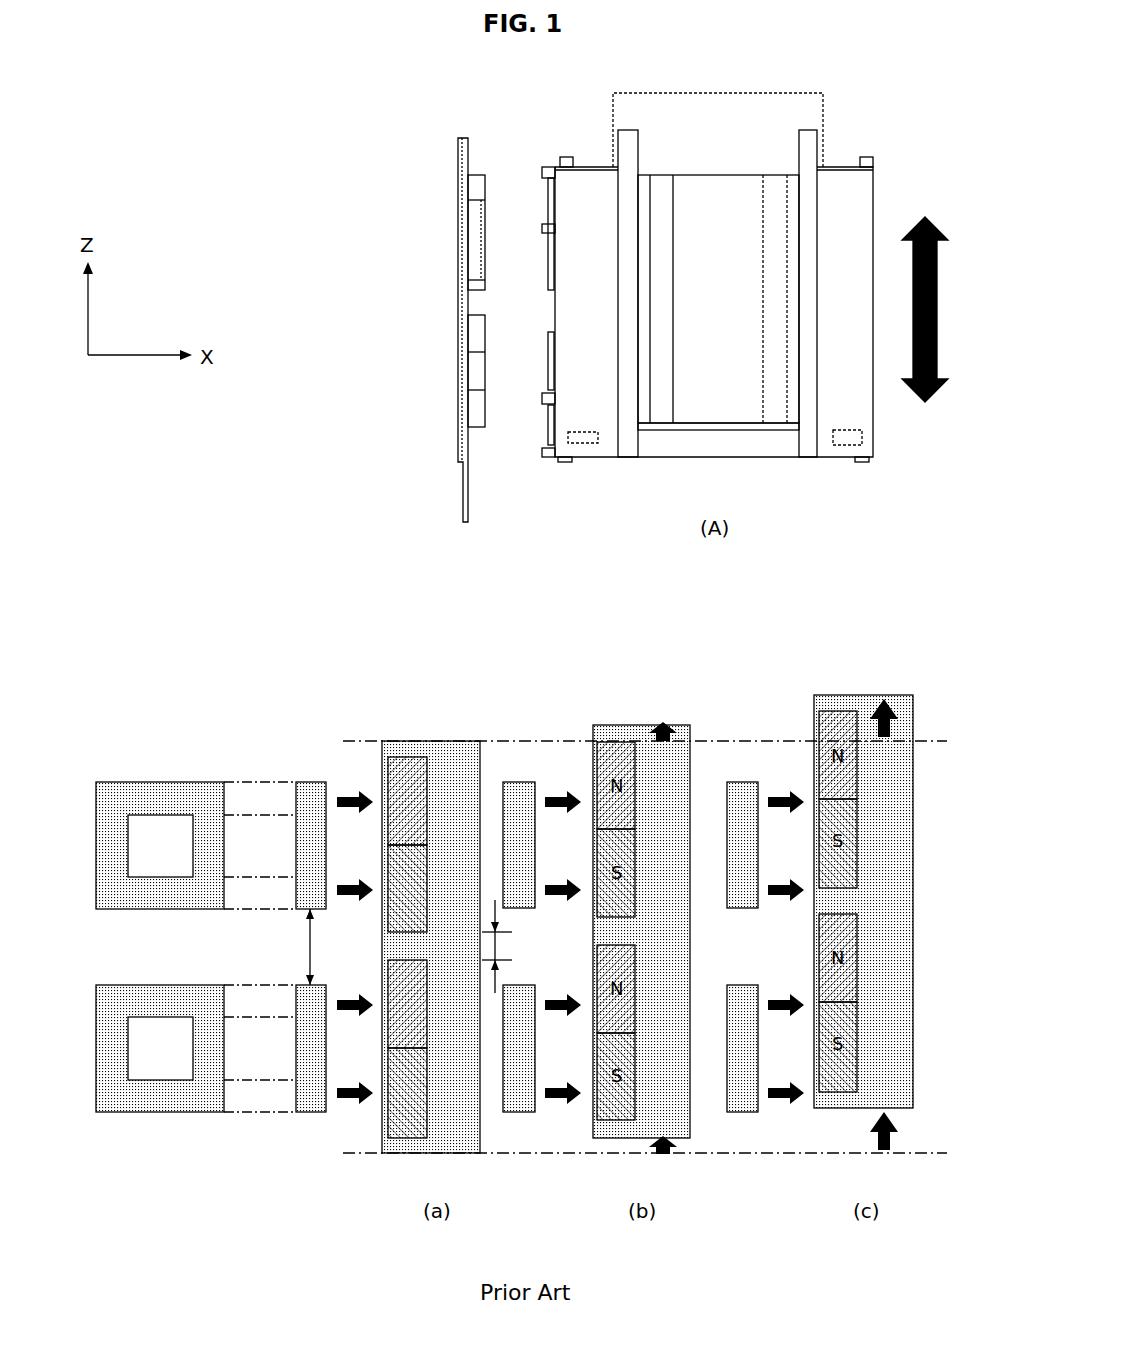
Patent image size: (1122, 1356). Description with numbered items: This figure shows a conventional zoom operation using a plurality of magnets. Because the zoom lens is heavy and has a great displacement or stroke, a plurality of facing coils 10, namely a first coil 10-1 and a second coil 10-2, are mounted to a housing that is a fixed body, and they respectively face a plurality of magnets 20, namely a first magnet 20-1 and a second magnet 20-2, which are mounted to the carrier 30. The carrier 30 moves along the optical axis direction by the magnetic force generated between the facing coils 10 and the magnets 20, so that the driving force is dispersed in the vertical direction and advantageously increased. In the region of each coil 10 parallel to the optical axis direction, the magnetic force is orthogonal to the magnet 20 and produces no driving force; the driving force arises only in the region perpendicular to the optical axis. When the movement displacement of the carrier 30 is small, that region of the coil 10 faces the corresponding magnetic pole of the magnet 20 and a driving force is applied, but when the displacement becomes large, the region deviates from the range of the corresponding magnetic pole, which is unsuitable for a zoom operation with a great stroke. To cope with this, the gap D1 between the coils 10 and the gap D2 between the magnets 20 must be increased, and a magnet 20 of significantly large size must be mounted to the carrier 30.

The coil 10 is at (352, 183).
The first coil 10-1 is at (475, 187).
The second coil 10-2 is at (475, 333).
The magnet 20 is at (552, 200).
The first magnet 20-1 is at (403, 765).
The second magnet 20-2 is at (388, 1125).
The carrier 30 is at (855, 190).
The gap between the coils D1 is at (293, 947).
The gap between the magnets D2 is at (512, 946).